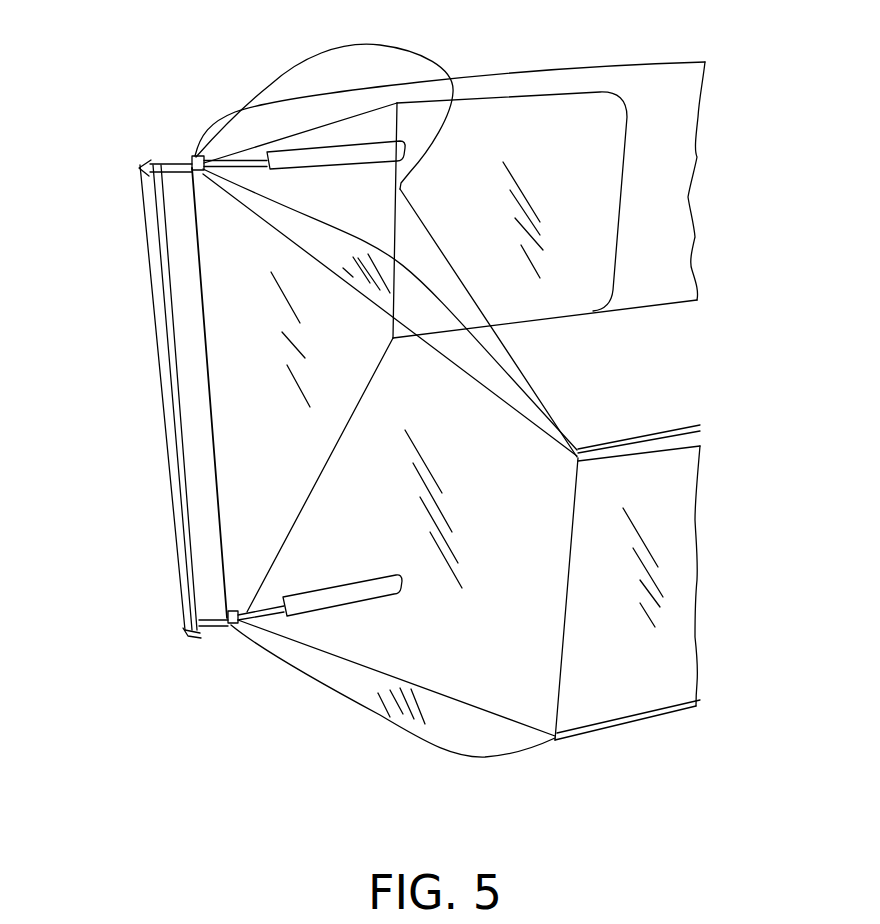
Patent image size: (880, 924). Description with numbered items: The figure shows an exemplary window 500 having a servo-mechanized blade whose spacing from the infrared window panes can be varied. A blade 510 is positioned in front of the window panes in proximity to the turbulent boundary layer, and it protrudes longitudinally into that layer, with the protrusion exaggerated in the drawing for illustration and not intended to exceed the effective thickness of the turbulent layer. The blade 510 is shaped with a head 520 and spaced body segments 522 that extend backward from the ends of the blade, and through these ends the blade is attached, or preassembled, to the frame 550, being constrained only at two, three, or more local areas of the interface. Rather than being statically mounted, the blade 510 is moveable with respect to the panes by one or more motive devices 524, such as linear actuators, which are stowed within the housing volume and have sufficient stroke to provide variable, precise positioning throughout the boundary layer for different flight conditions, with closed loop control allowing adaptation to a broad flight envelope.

The window 500 is at (113, 492).
The blade 510 is at (153, 232).
The head 520 is at (160, 378).
The body segments 522 is at (168, 164).
The motive devices 524 is at (320, 603).
The frame 550 is at (630, 432).